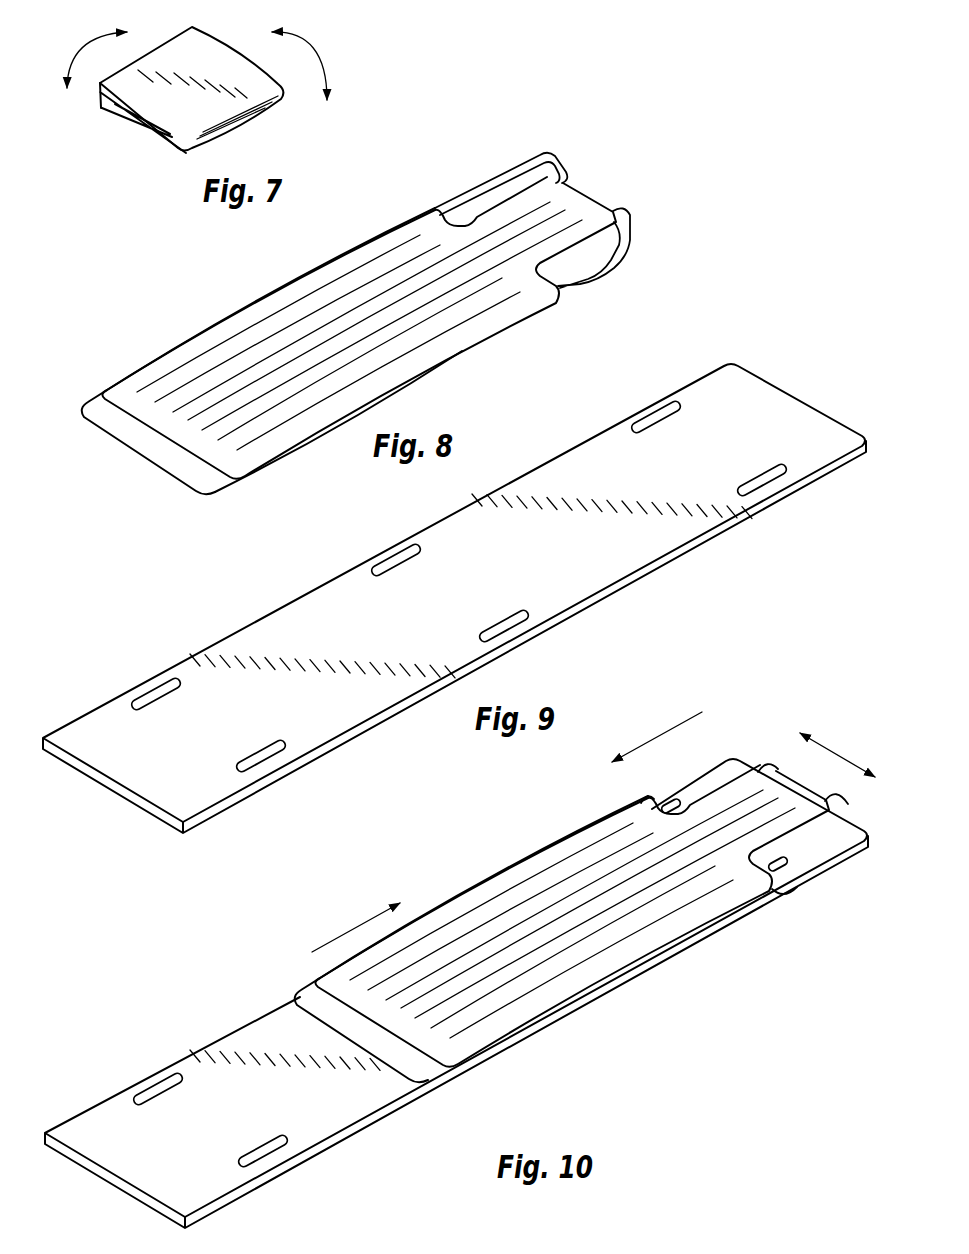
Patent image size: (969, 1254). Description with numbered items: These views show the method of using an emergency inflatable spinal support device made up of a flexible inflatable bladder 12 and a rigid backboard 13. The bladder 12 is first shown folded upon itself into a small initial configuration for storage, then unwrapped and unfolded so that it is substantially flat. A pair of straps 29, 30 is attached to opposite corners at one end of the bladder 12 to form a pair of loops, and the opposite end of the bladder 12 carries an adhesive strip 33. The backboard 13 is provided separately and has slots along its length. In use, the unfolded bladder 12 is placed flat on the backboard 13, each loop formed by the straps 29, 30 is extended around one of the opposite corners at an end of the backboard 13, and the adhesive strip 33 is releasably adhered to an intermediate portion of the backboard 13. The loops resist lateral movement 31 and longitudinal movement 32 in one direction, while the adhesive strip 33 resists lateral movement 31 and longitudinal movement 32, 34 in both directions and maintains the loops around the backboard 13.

In FIG. 7, the inflatable bladder 12 is at (140, 135).
In FIG. 8, the inflatable bladder 12 is at (231, 300).
In FIG. 10, the inflatable bladder 12 is at (480, 1013).
In FIG. 9, the rigid backboard 13 is at (203, 816).
In FIG. 10, the rigid backboard 13 is at (290, 1170).
In FIG. 8, the strap 29 is at (500, 175).
In FIG. 8, the strap 30 is at (610, 266).
In FIG. 8, the adhesive strip 33 is at (173, 460).
In FIG. 10, the adhesive strip 33 is at (407, 1062).
In FIG. 10, the lateral movement 31 is at (823, 745).
In FIG. 10, the longitudinal movement 32 is at (653, 737).
In FIG. 10, the longitudinal movement 34 is at (358, 923).